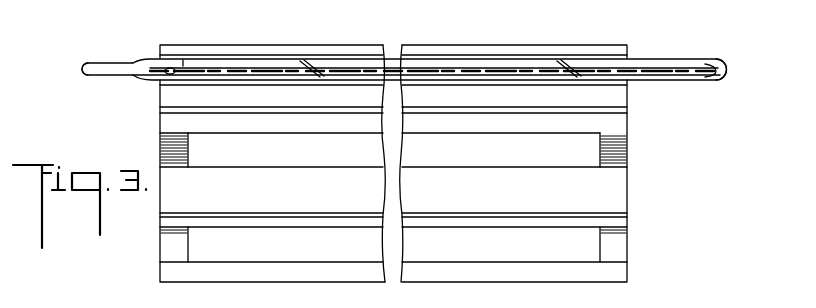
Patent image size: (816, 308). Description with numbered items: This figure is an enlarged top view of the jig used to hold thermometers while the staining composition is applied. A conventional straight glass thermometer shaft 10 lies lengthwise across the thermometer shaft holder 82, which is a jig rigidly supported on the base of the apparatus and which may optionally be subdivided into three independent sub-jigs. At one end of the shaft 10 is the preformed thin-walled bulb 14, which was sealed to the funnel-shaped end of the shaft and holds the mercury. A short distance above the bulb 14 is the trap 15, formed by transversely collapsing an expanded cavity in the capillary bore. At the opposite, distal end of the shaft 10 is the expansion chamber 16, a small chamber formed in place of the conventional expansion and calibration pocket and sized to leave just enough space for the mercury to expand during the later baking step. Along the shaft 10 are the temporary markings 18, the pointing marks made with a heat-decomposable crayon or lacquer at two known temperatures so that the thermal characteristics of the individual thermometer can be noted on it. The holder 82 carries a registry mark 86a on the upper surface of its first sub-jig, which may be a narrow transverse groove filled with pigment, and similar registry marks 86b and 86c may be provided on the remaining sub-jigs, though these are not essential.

The glass thermometer shaft 10 is at (565, 60).
The bulb 14 is at (95, 73).
The trap 15 is at (163, 78).
The expansion chamber 16 is at (713, 66).
The temporary markings 18 is at (236, 62).
The thermometer shaft holder 82 is at (670, 166).
The registry mark 86a is at (236, 62).
The registry mark 86b is at (246, 133).
The registry mark 86c is at (245, 224).